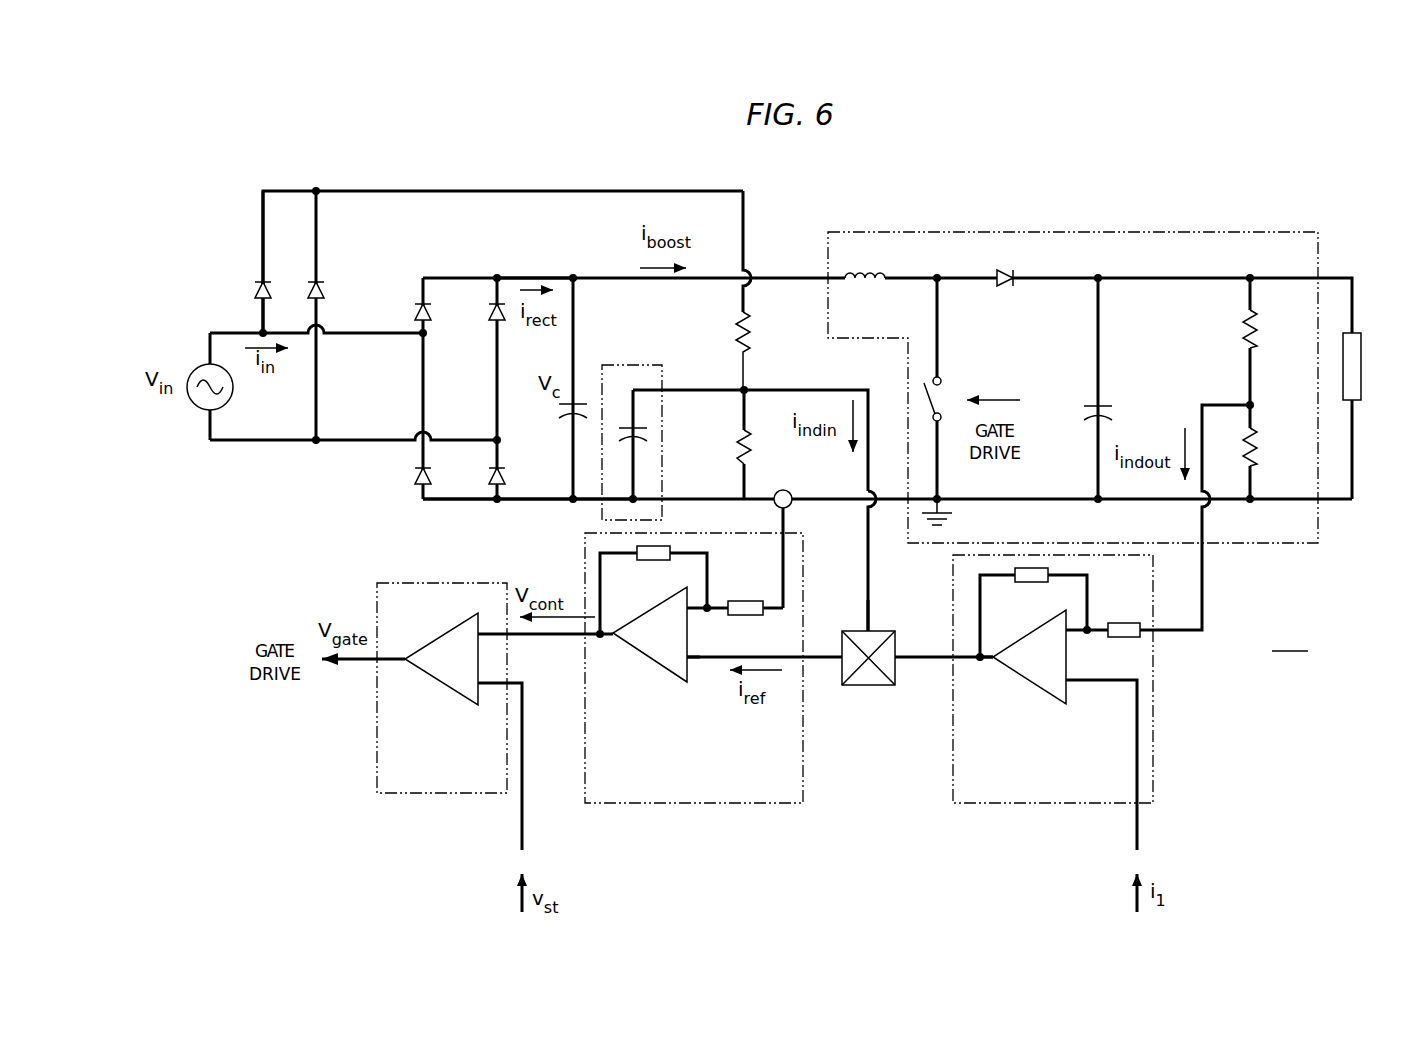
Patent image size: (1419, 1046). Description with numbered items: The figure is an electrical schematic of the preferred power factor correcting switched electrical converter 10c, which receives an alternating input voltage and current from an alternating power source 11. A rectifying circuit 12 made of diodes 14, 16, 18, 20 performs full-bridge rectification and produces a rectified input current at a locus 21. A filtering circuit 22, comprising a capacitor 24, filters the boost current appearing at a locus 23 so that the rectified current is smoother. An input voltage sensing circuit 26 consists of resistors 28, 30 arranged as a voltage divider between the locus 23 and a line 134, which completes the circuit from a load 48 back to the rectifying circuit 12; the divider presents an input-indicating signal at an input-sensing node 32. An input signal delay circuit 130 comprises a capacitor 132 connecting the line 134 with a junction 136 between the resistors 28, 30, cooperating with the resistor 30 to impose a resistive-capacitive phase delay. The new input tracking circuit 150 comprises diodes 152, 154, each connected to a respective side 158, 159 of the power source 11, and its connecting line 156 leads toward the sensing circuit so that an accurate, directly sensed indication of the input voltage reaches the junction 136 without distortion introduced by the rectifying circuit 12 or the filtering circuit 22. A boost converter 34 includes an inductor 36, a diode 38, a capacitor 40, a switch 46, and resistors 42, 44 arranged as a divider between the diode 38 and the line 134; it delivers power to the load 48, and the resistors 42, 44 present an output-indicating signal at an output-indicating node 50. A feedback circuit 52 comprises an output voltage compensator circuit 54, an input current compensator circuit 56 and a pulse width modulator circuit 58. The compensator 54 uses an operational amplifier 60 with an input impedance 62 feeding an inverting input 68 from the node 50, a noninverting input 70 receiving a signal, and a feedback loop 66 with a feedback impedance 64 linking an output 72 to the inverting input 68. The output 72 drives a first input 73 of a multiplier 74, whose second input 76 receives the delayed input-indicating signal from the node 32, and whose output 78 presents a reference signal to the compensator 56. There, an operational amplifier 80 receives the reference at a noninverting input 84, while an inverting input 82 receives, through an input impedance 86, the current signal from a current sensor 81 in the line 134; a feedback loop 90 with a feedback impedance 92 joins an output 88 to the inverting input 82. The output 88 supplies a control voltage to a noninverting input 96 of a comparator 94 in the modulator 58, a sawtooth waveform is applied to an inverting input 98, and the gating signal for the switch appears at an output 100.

The electrical converter 10c is at (1290, 640).
The alternating power source 11 is at (195, 408).
The rectifying circuit 12 is at (456, 262).
The diode 14 is at (415, 312).
The diode 16 is at (490, 318).
The diode 18 is at (415, 476).
The diode 20 is at (505, 478).
The locus 21 is at (536, 273).
The filtering circuit 22 is at (585, 266).
The locus 23 is at (716, 273).
The capacitor 24 is at (560, 410).
The input voltage sensing circuit 26 is at (793, 264).
The resistor 28 is at (736, 336).
The resistor 30 is at (737, 447).
The input-sensing node 32 is at (866, 572).
The boost converter 34 is at (1006, 216).
The inductor 36 is at (875, 290).
The diode 38 is at (1001, 289).
The capacitor 40 is at (1108, 406).
The resistor 42 is at (1242, 333).
The resistor 44 is at (1262, 446).
The switch 46 is at (944, 386).
The load 48 is at (1364, 382).
The output-indicating node 50 is at (1205, 558).
The feedback circuit 52 is at (1178, 745).
The output voltage compensator circuit 54 is at (1030, 805).
The input current compensator circuit 56 is at (690, 805).
The pulse width modulator circuit 58 is at (378, 766).
The operational amplifier 60 is at (1026, 683).
The input impedance 62 is at (1125, 623).
The feedback impedance 64 is at (1030, 583).
The feedback loop 66 is at (1067, 574).
The inverting input 68 is at (1074, 635).
The noninverting input 70 is at (1076, 686).
The output 72 is at (985, 663).
The first input 73 is at (893, 670).
The multiplier 74 is at (868, 690).
The second input 76 is at (864, 630).
The output 78 is at (845, 666).
The operational amplifier 80 is at (651, 662).
The current sensor 81 is at (793, 494).
The inverting input 82 is at (694, 612).
The noninverting input 84 is at (691, 664).
The input impedance 86 is at (748, 601).
The output 88 is at (609, 641).
The feedback loop 90 is at (709, 566).
The feedback impedance 92 is at (650, 562).
The comparator 94 is at (446, 691).
The noninverting input 96 is at (480, 631).
The inverting input 98 is at (500, 686).
The output 100 is at (408, 650).
The input signal delay circuit 130 is at (636, 365).
The capacitor 132 is at (643, 428).
The line 134 is at (532, 506).
The junction 136 is at (751, 390).
The input tracking circuit 150 is at (334, 172).
The diode 152 is at (256, 297).
The diode 154 is at (324, 293).
The auxiliary line 156 is at (748, 274).
The side 158 is at (238, 334).
The side 159 is at (262, 444).